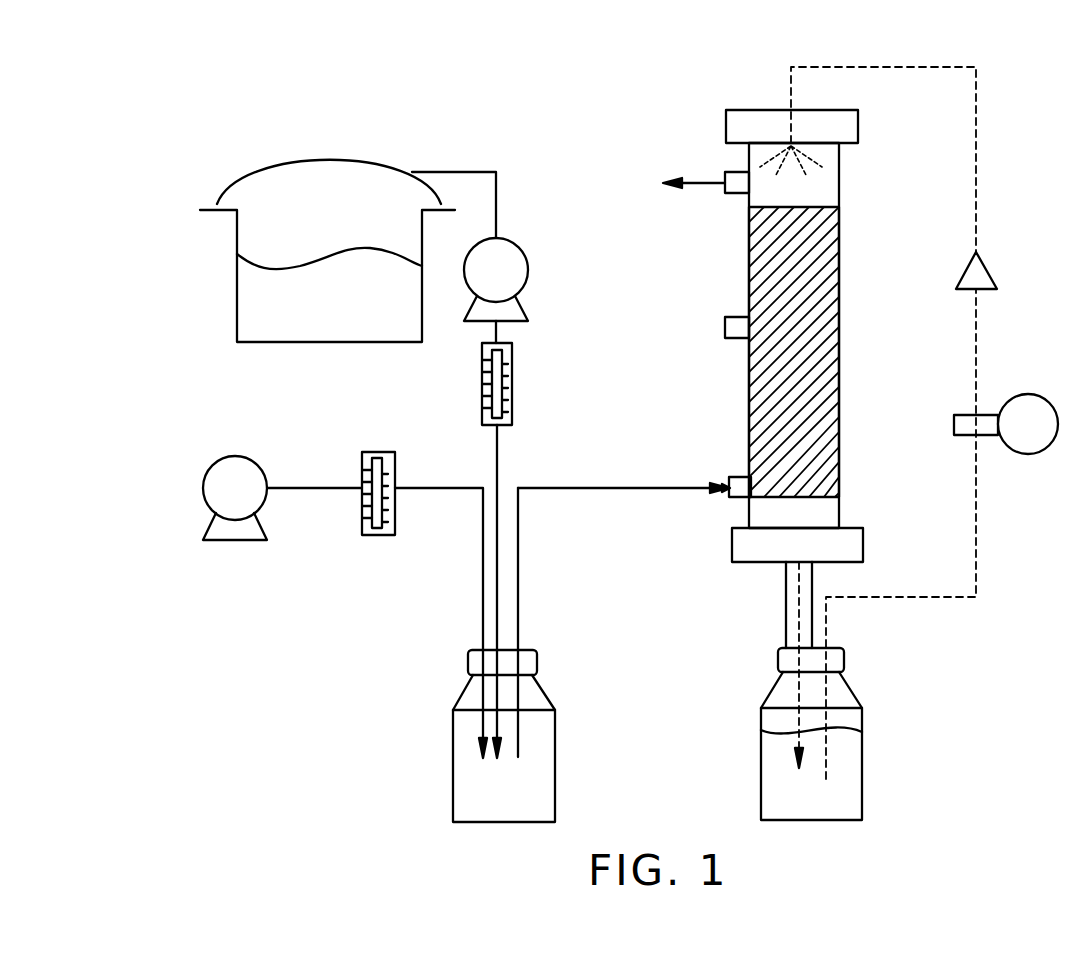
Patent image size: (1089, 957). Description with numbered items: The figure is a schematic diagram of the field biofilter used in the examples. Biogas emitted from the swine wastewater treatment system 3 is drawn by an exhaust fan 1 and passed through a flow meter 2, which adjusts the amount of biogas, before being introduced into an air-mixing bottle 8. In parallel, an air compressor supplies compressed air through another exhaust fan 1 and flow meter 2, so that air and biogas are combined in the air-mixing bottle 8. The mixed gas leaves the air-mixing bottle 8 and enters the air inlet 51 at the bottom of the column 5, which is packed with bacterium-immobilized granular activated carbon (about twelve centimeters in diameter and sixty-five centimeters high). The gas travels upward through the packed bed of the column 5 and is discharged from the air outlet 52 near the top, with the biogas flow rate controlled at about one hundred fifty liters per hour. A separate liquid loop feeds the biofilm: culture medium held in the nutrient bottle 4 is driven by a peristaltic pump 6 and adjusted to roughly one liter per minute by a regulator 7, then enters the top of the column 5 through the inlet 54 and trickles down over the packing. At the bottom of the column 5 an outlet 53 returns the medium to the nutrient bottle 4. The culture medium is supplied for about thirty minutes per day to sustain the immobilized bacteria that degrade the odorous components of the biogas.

The exhaust fan 1 is at (528, 270).
The flow meter 2 is at (512, 385).
The swine wastewater treatment system 3 is at (237, 310).
The nutrient bottle 4 is at (862, 762).
The column 5 is at (840, 340).
The peristaltic pump 6 is at (1028, 394).
The regulator 7 is at (1000, 264).
The air-mixing bottle 8 is at (453, 766).
The air inlet 51 is at (729, 478).
The air outlet 52 is at (725, 172).
The outlet 53 is at (786, 612).
The inlet 54 is at (726, 124).